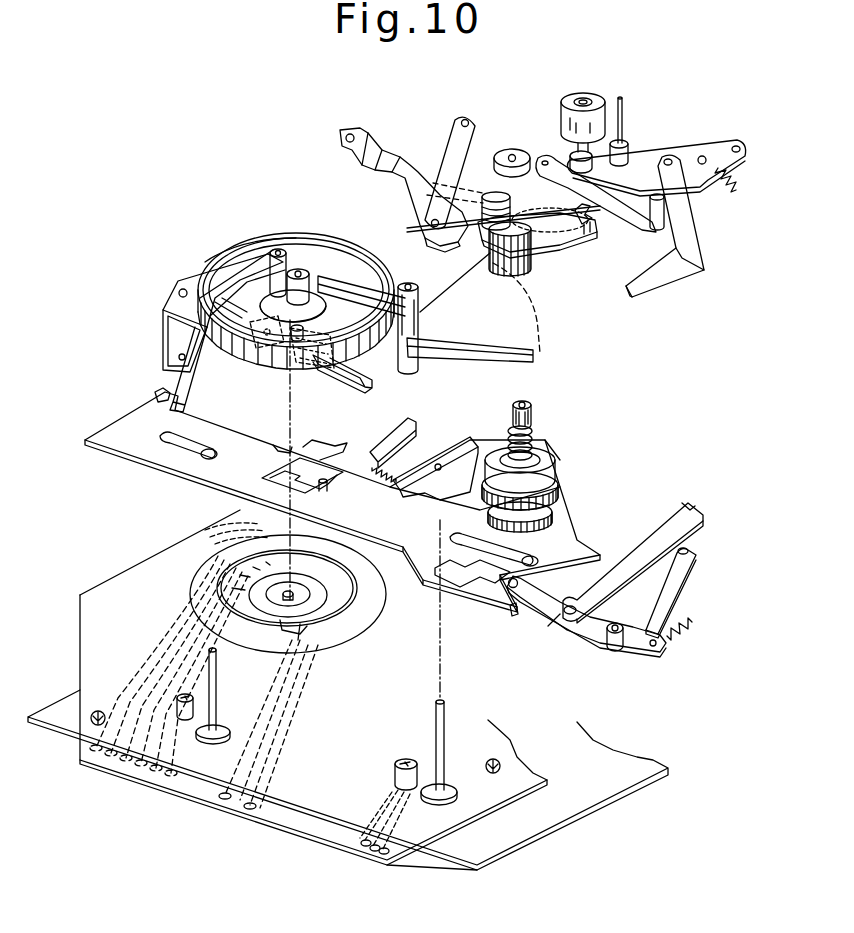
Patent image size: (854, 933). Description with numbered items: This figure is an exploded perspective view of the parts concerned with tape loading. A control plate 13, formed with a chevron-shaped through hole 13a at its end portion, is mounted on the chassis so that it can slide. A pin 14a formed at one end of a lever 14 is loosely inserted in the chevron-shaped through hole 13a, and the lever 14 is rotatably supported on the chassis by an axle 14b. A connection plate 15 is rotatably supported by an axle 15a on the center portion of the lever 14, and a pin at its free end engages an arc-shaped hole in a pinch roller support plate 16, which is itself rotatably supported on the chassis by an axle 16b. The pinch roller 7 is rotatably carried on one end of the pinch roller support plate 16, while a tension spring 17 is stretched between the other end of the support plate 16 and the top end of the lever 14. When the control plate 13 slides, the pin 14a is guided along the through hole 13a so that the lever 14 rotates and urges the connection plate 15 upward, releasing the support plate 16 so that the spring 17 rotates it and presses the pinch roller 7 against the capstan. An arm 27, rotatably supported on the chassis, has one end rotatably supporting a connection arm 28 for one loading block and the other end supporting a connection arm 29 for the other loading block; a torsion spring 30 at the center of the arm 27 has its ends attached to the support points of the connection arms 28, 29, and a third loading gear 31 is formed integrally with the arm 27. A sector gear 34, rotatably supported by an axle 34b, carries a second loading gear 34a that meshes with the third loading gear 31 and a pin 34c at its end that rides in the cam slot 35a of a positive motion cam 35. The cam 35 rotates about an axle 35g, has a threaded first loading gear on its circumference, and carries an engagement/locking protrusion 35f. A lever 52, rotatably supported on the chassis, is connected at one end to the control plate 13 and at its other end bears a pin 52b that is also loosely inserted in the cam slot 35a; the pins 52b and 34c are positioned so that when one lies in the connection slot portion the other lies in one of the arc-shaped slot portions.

The pinch roller 7 is at (563, 123).
The control plate 13 is at (143, 455).
The chevron-shaped through hole 13a is at (440, 578).
The lever 14 is at (598, 622).
The pin 14a is at (513, 610).
The axle 14b is at (622, 647).
The connection plate 15 is at (697, 250).
The axle 15a is at (556, 623).
The pinch roller support plate 16 is at (718, 145).
The axle 16b is at (702, 160).
The tension spring 17 is at (735, 185).
The arm 27 is at (490, 167).
The connection arm 28 is at (398, 177).
The connection arm 29 is at (453, 150).
The torsion spring 30 is at (557, 247).
The third loading gear 31 is at (530, 260).
The sector gear 34 is at (480, 330).
The second loading gear 34a is at (543, 360).
The axle 34b is at (413, 282).
The pin 34c is at (307, 268).
The positive motion cam 35 is at (370, 347).
The cam slot 35a is at (217, 258).
The engagement/locking protrusion 35f is at (305, 378).
The axle 35g is at (267, 347).
The lever 52 is at (172, 297).
The pin 52b is at (273, 253).